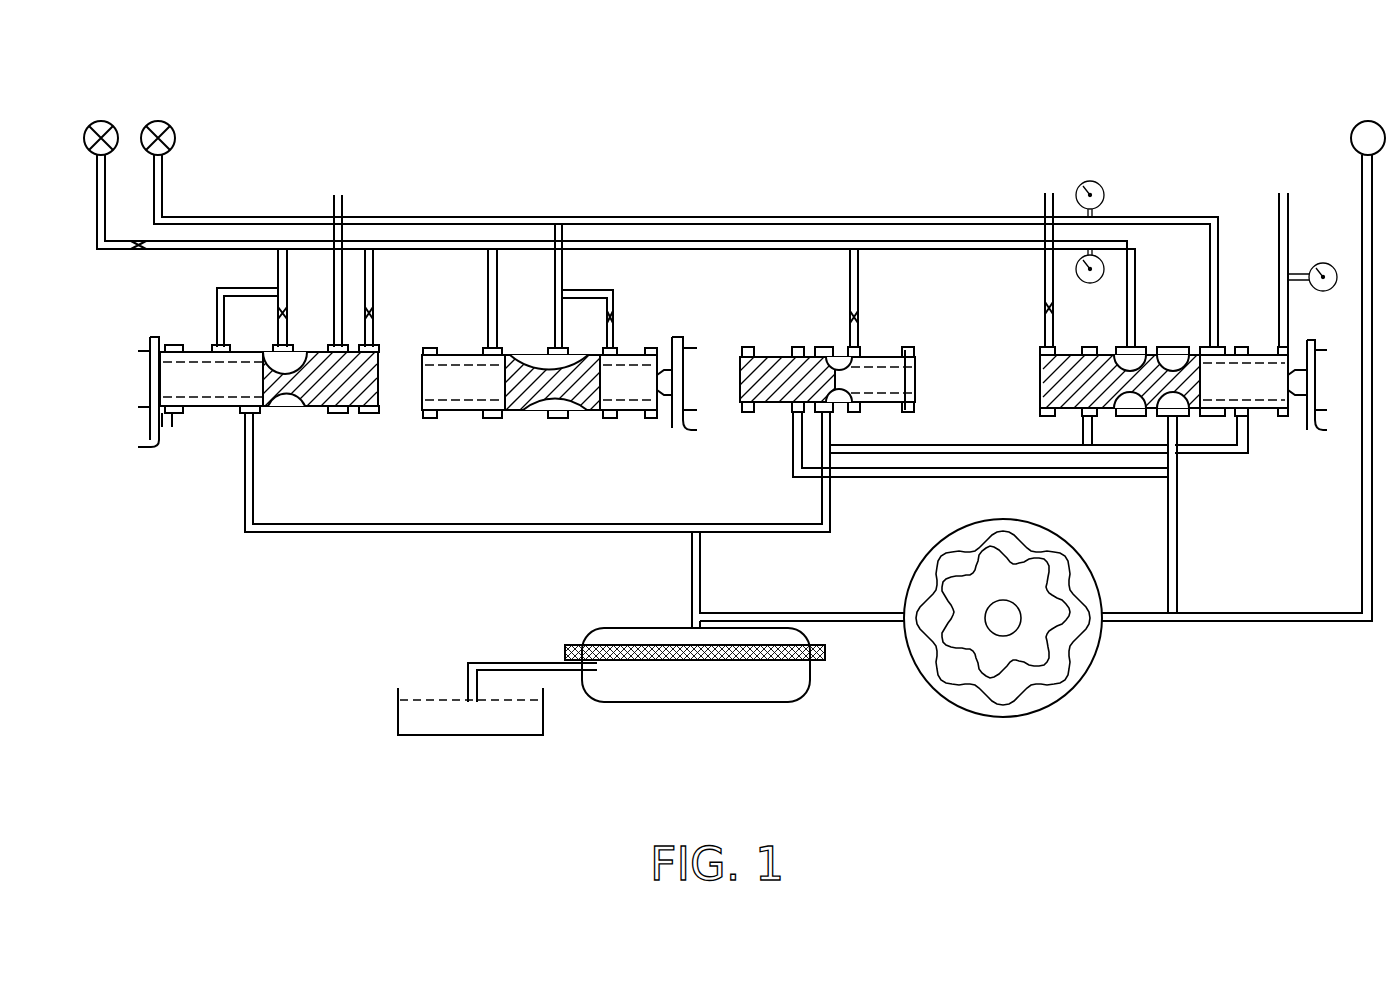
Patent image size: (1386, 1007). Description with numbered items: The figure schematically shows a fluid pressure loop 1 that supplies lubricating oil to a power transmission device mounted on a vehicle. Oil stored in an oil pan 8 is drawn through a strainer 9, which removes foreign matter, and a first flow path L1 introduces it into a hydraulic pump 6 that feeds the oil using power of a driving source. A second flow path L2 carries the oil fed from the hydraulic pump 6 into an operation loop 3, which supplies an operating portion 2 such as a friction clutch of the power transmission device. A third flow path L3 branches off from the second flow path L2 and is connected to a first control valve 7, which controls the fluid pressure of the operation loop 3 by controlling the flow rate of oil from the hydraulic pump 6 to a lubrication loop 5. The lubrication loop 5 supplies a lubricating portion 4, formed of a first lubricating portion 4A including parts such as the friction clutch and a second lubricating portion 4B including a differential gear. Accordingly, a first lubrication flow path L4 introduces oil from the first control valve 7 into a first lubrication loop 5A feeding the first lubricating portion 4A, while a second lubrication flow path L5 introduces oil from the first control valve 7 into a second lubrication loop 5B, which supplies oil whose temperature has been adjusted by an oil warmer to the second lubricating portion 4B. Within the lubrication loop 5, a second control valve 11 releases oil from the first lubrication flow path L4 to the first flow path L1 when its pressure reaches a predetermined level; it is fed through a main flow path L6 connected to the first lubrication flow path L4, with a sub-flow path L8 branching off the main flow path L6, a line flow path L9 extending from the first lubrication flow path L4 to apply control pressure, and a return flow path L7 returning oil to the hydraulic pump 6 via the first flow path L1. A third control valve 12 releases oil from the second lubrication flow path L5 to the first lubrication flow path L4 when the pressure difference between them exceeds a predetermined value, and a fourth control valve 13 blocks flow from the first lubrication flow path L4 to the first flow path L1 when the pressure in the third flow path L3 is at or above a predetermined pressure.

The fluid pressure loop 1 is at (481, 57).
The operating portion 2 is at (1367, 121).
The operation loop 3 is at (1361, 507).
The lubricating portion 4 is at (178, 65).
The first lubricating portion 4A is at (100, 121).
The second lubricating portion 4B is at (158, 121).
The lubrication loop 5 is at (833, 136).
The first lubrication loop 5A is at (773, 239).
The second lubrication loop 5B is at (815, 215).
The hydraulic pump 6 is at (1100, 670).
The first control valve 7 is at (1169, 344).
The oil pan 8 is at (504, 736).
The strainer 9 is at (723, 703).
The second control valve 11 is at (178, 343).
The third control valve 12 is at (458, 344).
The fourth control valve 13 is at (881, 344).
The first flow path L1 is at (858, 623).
The second flow path L2 is at (1297, 622).
The third flow path L3 is at (1177, 515).
The first lubrication flow path L4 is at (708, 240).
The second lubrication flow path L5 is at (920, 216).
The main flow path L6 is at (288, 279).
The return flow path L7 is at (253, 467).
The sub-flow path L8 is at (212, 300).
The line flow path L9 is at (374, 279).